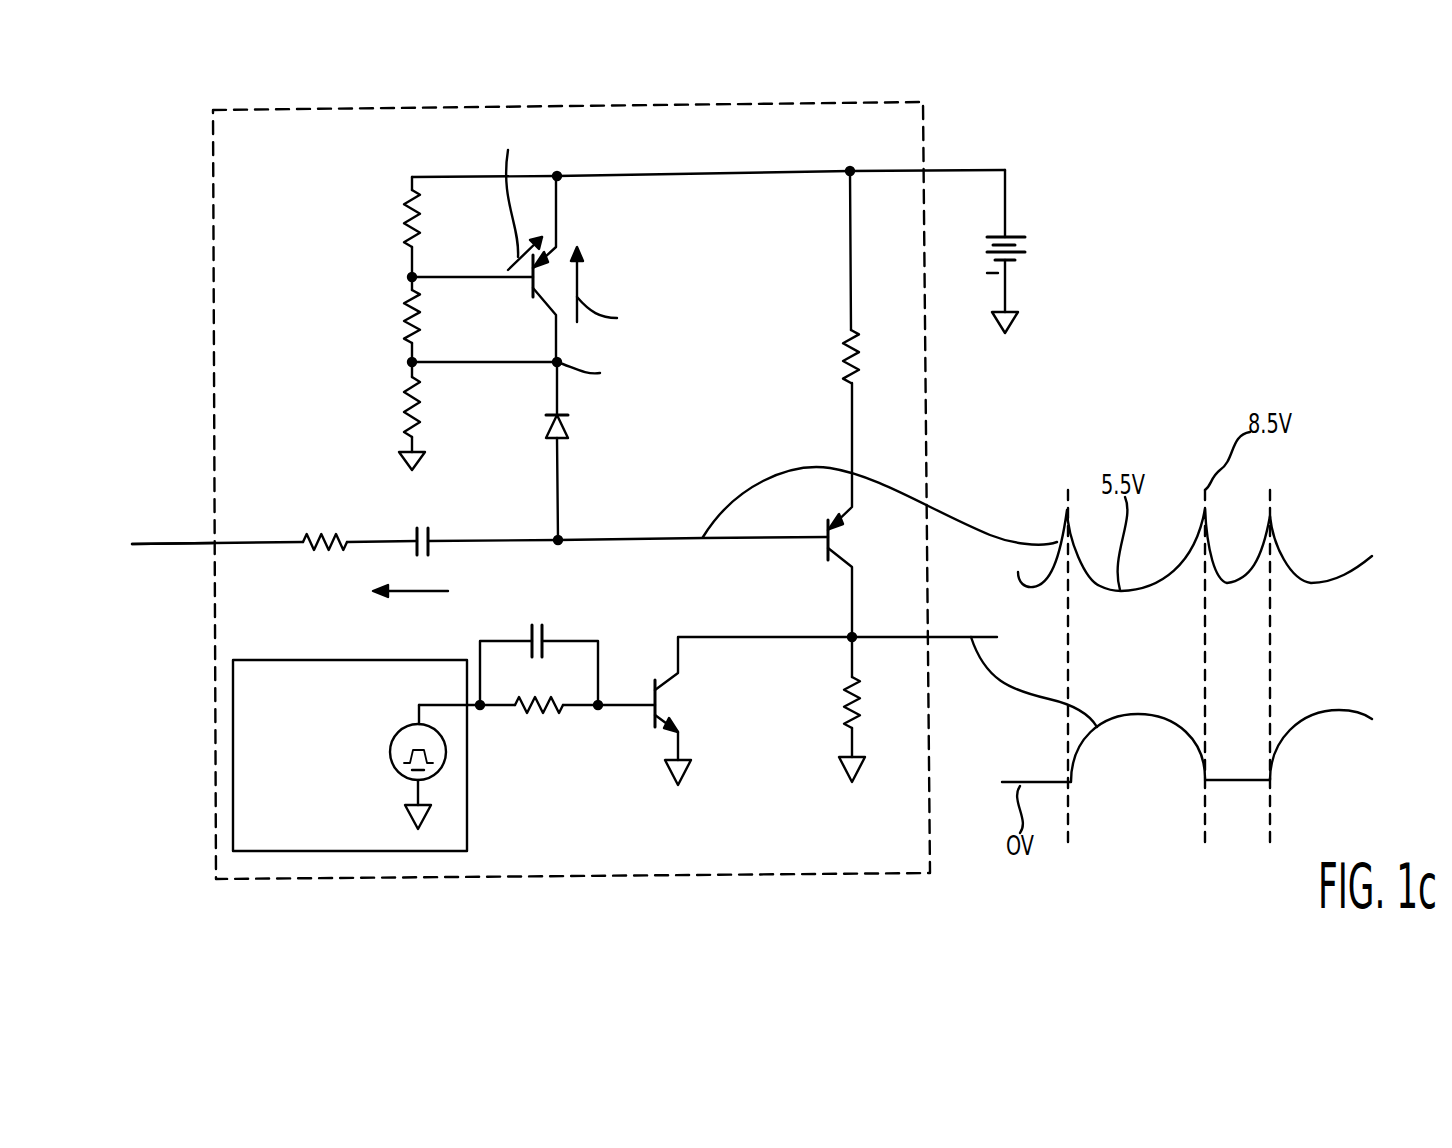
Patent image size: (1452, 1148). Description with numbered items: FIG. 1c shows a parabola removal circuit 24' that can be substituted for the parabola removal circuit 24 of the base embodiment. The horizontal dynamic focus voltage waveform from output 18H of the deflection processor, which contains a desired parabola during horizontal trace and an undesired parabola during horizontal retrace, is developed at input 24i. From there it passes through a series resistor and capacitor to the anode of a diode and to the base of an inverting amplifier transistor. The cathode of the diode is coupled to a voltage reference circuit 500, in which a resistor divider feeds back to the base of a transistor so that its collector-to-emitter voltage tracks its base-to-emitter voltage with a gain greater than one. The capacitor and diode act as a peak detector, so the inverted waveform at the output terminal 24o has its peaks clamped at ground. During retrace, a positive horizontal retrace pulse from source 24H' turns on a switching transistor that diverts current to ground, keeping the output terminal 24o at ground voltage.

The parabola removal circuit 24 is at (606, 490).
The parabola removal circuit 24' is at (582, 525).
The input 24i is at (212, 543).
The output terminal 24o is at (928, 636).
The source 24H' is at (350, 723).
The output 18H is at (468, 533).
The voltage reference circuit 500 is at (513, 341).